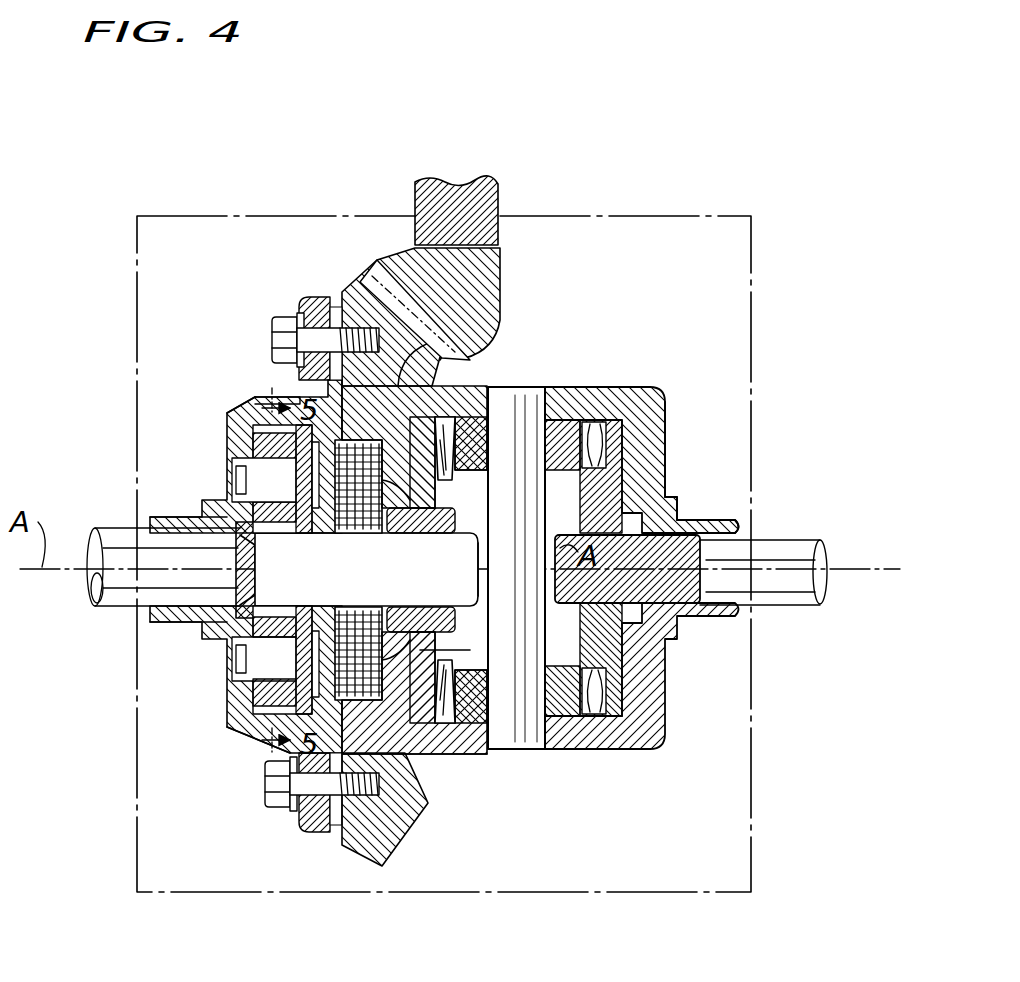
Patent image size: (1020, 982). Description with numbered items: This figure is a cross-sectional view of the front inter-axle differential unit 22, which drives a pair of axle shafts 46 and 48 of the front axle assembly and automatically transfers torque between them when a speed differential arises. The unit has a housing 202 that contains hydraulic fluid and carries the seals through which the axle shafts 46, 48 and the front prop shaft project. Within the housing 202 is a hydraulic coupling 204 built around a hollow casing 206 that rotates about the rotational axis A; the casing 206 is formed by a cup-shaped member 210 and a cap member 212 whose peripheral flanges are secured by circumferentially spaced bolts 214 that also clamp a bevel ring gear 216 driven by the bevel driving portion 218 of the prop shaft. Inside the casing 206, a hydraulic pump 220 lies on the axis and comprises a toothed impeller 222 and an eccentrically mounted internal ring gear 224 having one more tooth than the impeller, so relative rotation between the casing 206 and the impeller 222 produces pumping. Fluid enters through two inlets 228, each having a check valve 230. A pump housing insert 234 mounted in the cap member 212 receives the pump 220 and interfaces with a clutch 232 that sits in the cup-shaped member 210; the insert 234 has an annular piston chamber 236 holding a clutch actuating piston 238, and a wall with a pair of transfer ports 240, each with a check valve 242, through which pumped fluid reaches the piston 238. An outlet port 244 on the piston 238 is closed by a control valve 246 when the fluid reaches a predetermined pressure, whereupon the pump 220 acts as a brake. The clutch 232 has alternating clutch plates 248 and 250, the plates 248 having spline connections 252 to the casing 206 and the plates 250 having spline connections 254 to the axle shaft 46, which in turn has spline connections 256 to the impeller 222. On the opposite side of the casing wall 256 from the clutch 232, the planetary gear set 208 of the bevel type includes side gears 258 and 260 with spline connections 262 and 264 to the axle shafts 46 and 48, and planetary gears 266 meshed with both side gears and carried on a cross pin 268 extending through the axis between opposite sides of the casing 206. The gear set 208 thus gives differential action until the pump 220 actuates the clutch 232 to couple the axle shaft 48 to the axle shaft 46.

The inter-axle differential unit 22 is at (658, 216).
The left axle shaft 46 is at (118, 588).
The right axle shaft 48 is at (792, 552).
The housing 202 is at (762, 306).
The hydraulic coupling 204 is at (178, 788).
The casing 206 is at (600, 386).
The planetary gear set 208 is at (652, 420).
The cup-shaped member 210 is at (490, 382).
The cap member 212 is at (246, 398).
The bolts 214 is at (318, 330).
The ring gear 216 is at (368, 284).
The bevel driving portion 218 is at (480, 302).
The hydraulic pump 220 is at (256, 446).
The impeller 222 is at (258, 510).
The internal ring gear 224 is at (262, 420).
The inlet 228 is at (224, 680).
The check valve 230 is at (236, 662).
The clutch 232 is at (402, 754).
The pump housing insert 234 is at (270, 398).
The annular piston chamber 236 is at (320, 446).
The clutch actuating piston 238 is at (232, 730).
The transfer ports 240 is at (250, 592).
The check valve 242 is at (234, 472).
The outlet port 244 is at (382, 530).
The control valve 246 is at (402, 472).
The clutch plates 248 is at (250, 548).
The clutch plates 250 is at (366, 576).
The spline connections 252 is at (410, 386).
The spline connections 254 is at (380, 576).
The spline connections 256 is at (242, 540).
The side gear 258 is at (606, 480).
The side gear 260 is at (452, 432).
The spline connection 262 is at (626, 566).
The spline connection 264 is at (450, 573).
The planetary gears 266 is at (558, 706).
The cross pin 268 is at (536, 506).